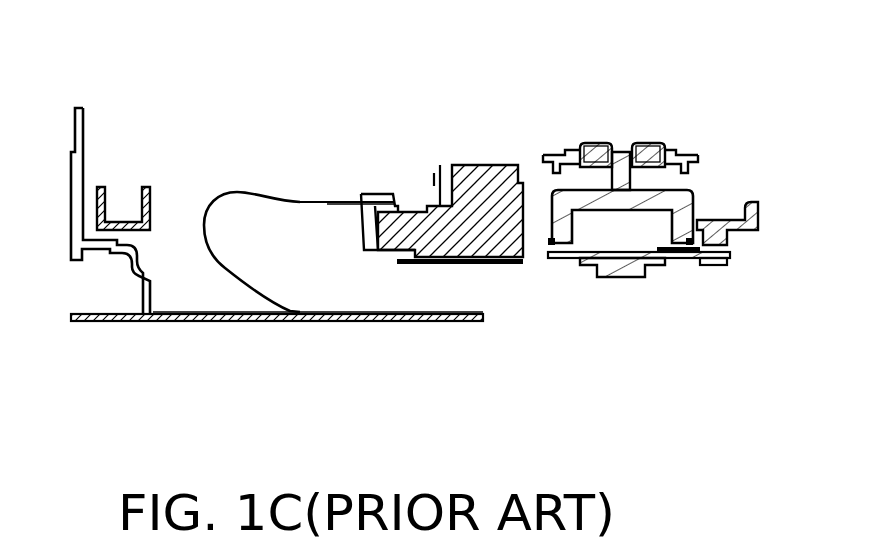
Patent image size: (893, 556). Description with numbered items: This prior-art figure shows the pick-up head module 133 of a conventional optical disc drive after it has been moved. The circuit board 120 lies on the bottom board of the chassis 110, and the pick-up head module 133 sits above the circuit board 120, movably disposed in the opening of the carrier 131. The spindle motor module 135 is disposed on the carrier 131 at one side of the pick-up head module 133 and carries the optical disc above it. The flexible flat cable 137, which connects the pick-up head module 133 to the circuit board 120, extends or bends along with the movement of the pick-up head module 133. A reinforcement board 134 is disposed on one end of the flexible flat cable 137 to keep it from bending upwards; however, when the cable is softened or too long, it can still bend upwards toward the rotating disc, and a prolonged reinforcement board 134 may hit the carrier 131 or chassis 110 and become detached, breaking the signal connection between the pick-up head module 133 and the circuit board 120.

The chassis 110 is at (82, 108).
The circuit board 120 is at (173, 322).
The carrier 131 is at (103, 197).
The pick-up head module 133 is at (503, 163).
The reinforcement board 134 is at (342, 200).
The spindle motor module 135 is at (673, 127).
The flexible flat cable 137 is at (235, 191).